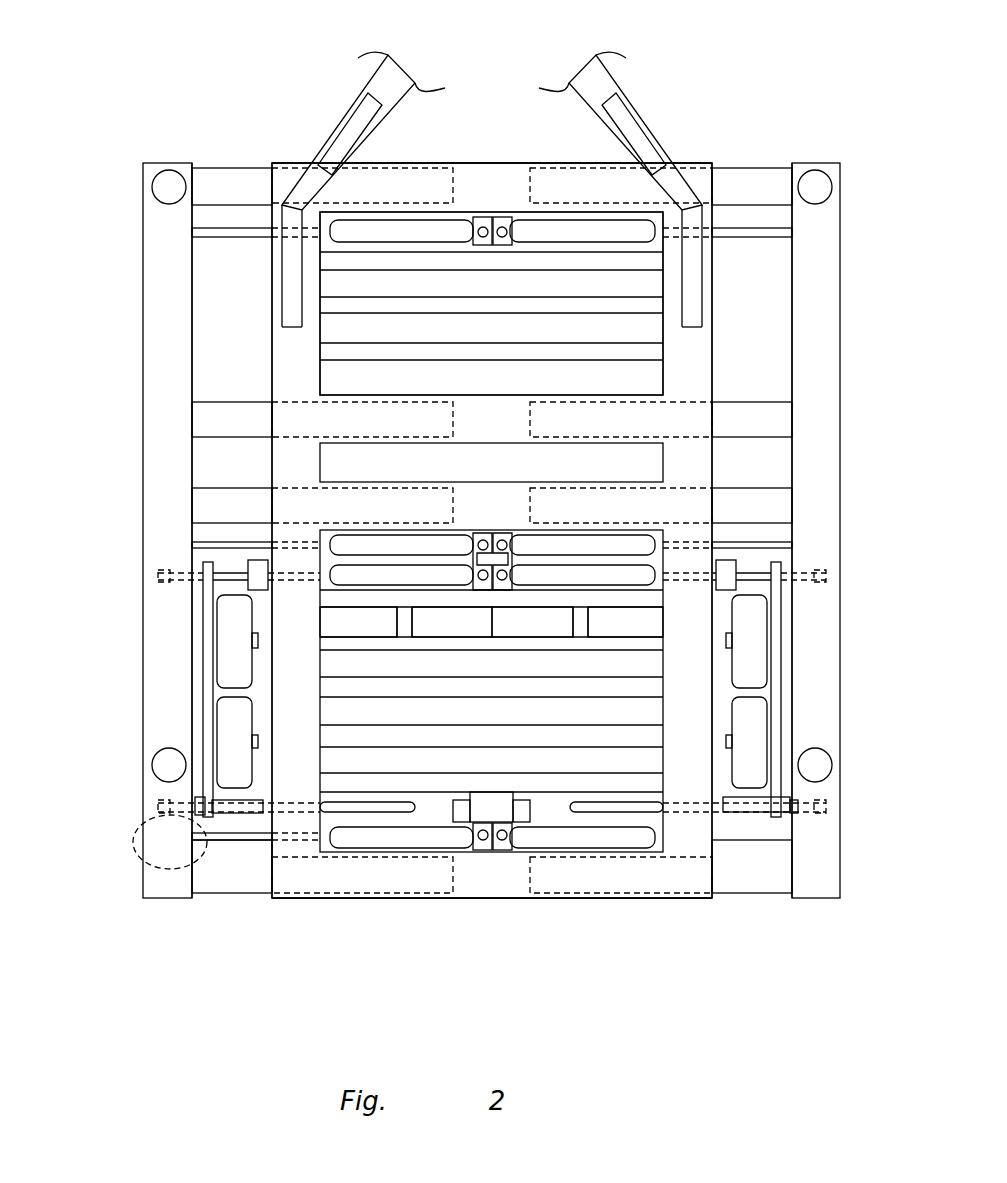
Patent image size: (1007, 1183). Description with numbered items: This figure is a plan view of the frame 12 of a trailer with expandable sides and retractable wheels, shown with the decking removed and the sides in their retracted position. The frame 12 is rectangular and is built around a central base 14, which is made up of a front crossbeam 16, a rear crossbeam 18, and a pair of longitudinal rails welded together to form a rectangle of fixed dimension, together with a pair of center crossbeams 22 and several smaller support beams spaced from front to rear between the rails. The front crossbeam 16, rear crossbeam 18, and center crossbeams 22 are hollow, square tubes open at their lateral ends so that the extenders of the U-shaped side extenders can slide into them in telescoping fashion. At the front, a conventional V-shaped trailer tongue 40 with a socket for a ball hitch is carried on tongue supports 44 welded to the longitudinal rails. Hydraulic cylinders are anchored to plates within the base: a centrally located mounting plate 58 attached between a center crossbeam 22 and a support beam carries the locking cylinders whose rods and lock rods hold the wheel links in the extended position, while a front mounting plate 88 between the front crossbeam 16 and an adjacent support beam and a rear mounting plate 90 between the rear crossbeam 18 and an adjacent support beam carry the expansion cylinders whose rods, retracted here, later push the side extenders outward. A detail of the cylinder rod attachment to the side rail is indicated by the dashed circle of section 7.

The frame 12 is at (842, 143).
The central base 14 is at (722, 352).
The front crossbeam 16 is at (491, 163).
The rear crossbeam 18 is at (348, 900).
The center crossbeams 22 is at (570, 480).
The trailer tongue 40 is at (572, 88).
The tongue supports 44 is at (630, 100).
The mounting plate 58 is at (490, 590).
The front mounting plate 88 is at (480, 247).
The rear mounting plate 90 is at (483, 795).
The detail circle 7 is at (135, 858).